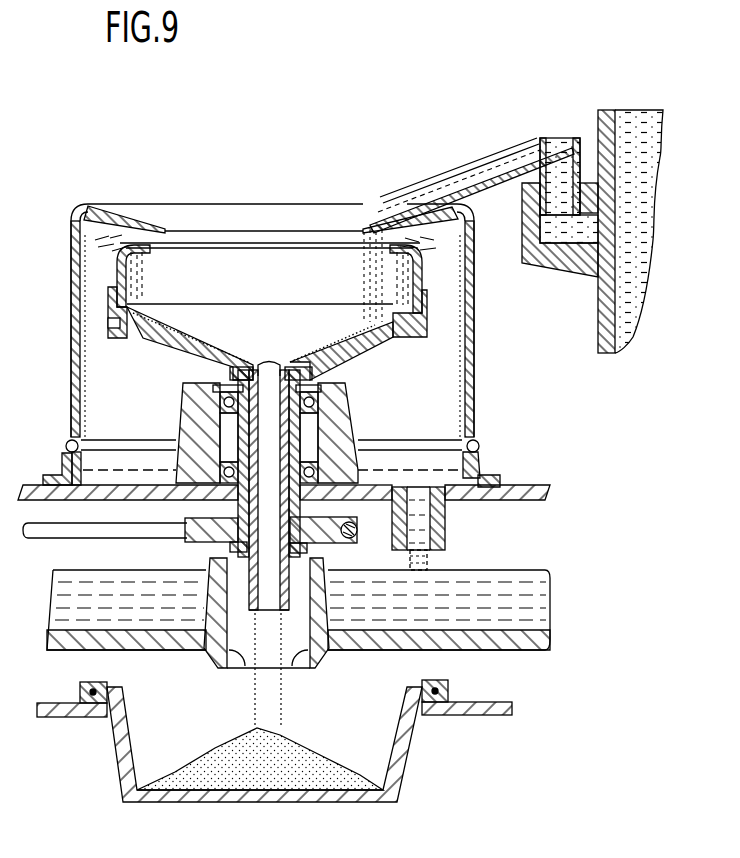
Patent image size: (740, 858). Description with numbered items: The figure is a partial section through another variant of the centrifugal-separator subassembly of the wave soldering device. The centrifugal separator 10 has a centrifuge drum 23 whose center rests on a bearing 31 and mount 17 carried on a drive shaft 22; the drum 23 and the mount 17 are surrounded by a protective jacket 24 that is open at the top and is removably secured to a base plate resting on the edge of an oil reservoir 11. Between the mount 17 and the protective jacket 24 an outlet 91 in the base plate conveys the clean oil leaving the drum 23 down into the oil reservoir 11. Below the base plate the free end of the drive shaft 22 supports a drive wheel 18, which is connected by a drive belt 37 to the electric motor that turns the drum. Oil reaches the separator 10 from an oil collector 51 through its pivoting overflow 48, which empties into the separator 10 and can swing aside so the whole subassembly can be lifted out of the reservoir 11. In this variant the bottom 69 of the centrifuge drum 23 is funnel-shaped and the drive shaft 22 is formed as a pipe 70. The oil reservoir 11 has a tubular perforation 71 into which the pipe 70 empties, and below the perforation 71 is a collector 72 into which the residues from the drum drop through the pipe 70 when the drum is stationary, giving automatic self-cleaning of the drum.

The centrifugal separator 10 is at (230, 182).
The oil reservoir 11 is at (530, 648).
The mount 17 is at (337, 401).
The drive wheel 18 is at (340, 542).
The drive shaft 22 is at (291, 657).
The centrifuge drum 23 is at (430, 315).
The protective jacket 24 is at (72, 261).
The bearing 31 is at (318, 460).
The drive belt 37 is at (48, 530).
The pivoting overflow 48 is at (481, 160).
The oil collector 51 is at (602, 333).
The bottom of the centrifuge drum 69 is at (330, 347).
The pipe 70 is at (270, 380).
The tubular perforation 71 is at (243, 662).
The collector 72 is at (407, 748).
The outlet 91 is at (443, 510).